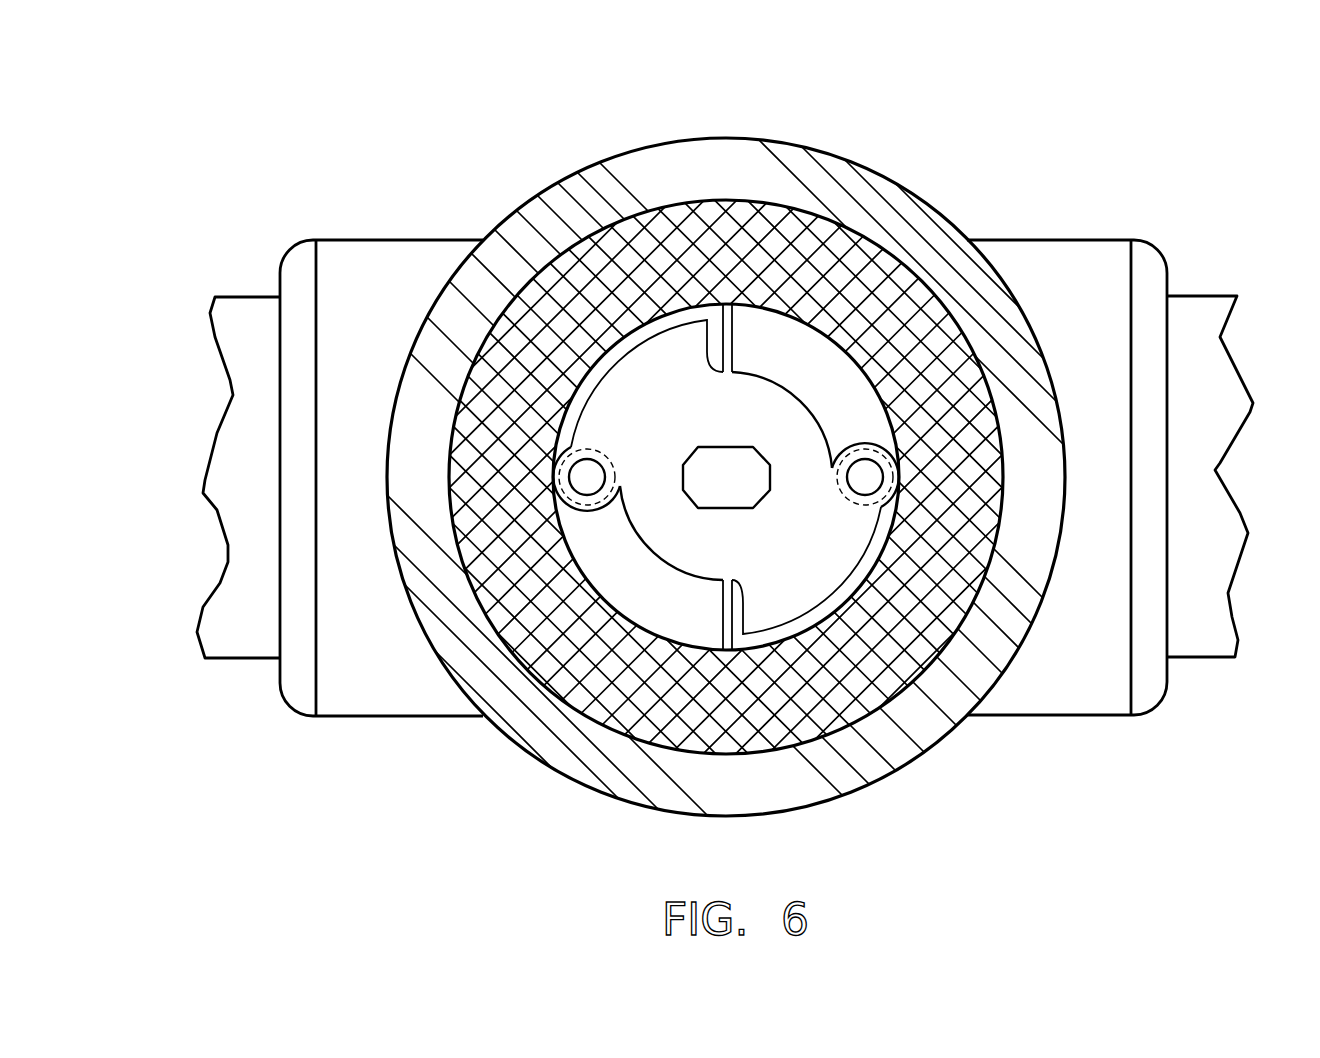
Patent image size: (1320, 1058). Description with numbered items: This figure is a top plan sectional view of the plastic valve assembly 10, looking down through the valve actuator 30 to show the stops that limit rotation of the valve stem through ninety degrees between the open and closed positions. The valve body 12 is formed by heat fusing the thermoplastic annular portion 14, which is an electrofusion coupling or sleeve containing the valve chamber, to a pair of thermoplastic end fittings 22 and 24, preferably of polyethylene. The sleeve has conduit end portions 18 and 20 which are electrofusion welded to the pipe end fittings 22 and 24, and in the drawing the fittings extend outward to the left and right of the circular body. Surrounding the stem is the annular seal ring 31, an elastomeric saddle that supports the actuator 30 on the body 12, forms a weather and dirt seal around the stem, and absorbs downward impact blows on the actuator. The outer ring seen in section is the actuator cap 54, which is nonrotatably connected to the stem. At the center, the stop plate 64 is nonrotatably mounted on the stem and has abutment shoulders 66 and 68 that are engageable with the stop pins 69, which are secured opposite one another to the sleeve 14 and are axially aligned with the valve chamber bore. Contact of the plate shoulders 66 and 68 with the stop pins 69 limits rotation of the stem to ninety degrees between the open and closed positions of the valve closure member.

The plastic valve assembly 10 is at (400, 115).
The valve body 12 is at (402, 202).
The thermoplastic annular portion 14 is at (1065, 252).
The conduit end portion 18 is at (300, 262).
The conduit end portion 20 is at (1148, 263).
The end fitting 22 is at (248, 313).
The end fitting 24 is at (1190, 312).
The valve actuator 30 is at (575, 127).
The annular seal ring 31 is at (765, 715).
The actuator cap 54 is at (930, 703).
The stop plate 64 is at (745, 388).
The abutment shoulder 66 is at (590, 460).
The abutment shoulder 68 is at (862, 505).
The stop pins 69 is at (863, 463).